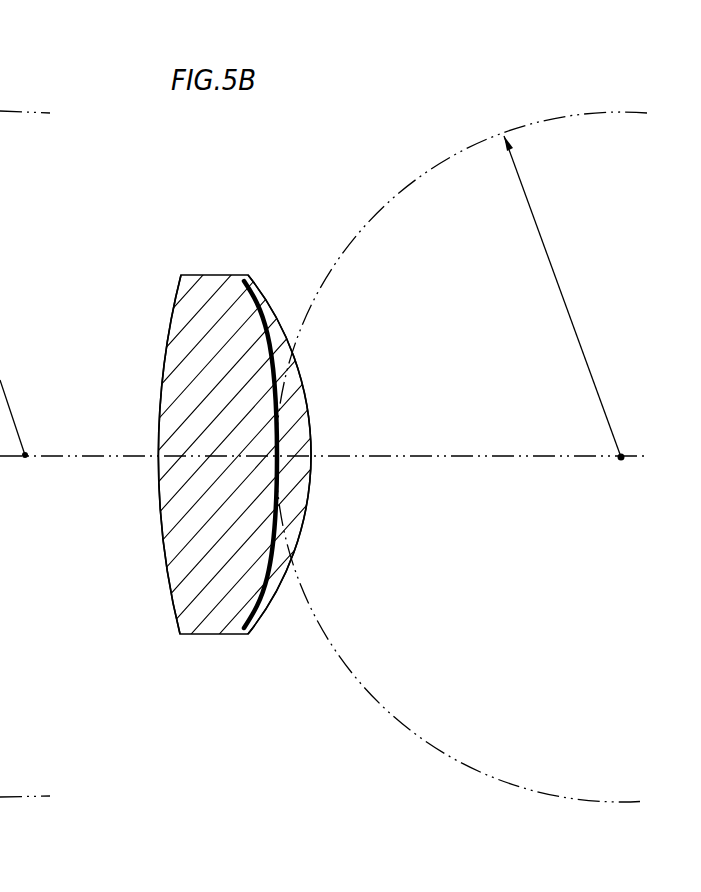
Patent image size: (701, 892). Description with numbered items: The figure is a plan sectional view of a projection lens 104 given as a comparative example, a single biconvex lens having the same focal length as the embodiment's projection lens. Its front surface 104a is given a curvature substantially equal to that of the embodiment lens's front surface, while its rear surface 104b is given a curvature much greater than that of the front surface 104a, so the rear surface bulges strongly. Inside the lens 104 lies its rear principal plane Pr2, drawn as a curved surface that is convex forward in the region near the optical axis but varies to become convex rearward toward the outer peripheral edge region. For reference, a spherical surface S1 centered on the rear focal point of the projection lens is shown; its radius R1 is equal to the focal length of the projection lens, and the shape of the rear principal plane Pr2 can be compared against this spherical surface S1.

The projection lens 104 is at (163, 364).
The front surface 104a is at (160, 502).
The rear surface 104b is at (312, 502).
The rear principal plane Pr2 is at (268, 332).
The spherical surface S1 is at (394, 717).
The radius R1 is at (564, 298).